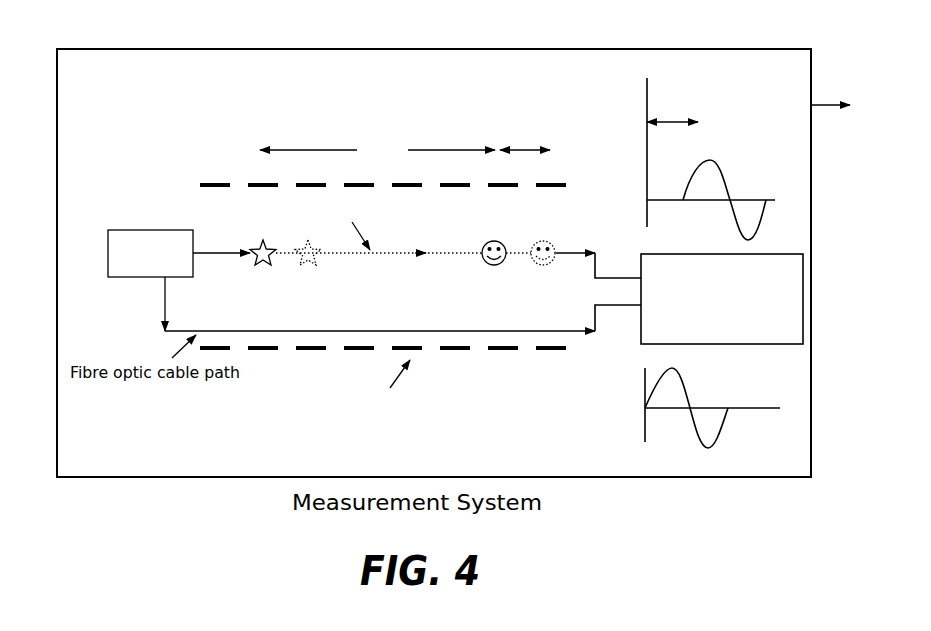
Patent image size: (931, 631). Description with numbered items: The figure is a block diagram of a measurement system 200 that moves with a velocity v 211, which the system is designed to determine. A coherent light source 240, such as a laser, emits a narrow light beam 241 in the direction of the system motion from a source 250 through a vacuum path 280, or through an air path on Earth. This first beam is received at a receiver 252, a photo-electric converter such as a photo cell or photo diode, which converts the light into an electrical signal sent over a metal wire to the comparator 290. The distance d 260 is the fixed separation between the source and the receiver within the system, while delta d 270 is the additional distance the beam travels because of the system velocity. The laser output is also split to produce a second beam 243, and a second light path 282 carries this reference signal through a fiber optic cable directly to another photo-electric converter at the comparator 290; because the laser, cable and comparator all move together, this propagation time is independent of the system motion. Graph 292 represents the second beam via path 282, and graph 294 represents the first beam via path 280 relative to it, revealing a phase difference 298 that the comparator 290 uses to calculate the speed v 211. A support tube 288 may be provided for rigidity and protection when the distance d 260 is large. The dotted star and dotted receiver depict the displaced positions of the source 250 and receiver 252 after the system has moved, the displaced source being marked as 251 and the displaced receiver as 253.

The measurement system 200 is at (211, 28).
The velocity v 211 is at (832, 107).
The coherent light source 240 is at (150, 230).
The narrow light beam 241 is at (213, 253).
The second beam 243 is at (165, 302).
The source 250 is at (255, 264).
The displaced source position 251 is at (318, 262).
The receiver 252 is at (494, 241).
The displaced receiver position 253 is at (545, 241).
The distance d 260 is at (460, 150).
The delta d 270 is at (535, 150).
The vacuum path 280 is at (385, 253).
The second light path 282 is at (385, 331).
The support tube 288 is at (505, 352).
The comparator 290 is at (787, 340).
The graph 292 is at (720, 430).
The graph 294 is at (763, 213).
The phase difference 298 is at (668, 125).